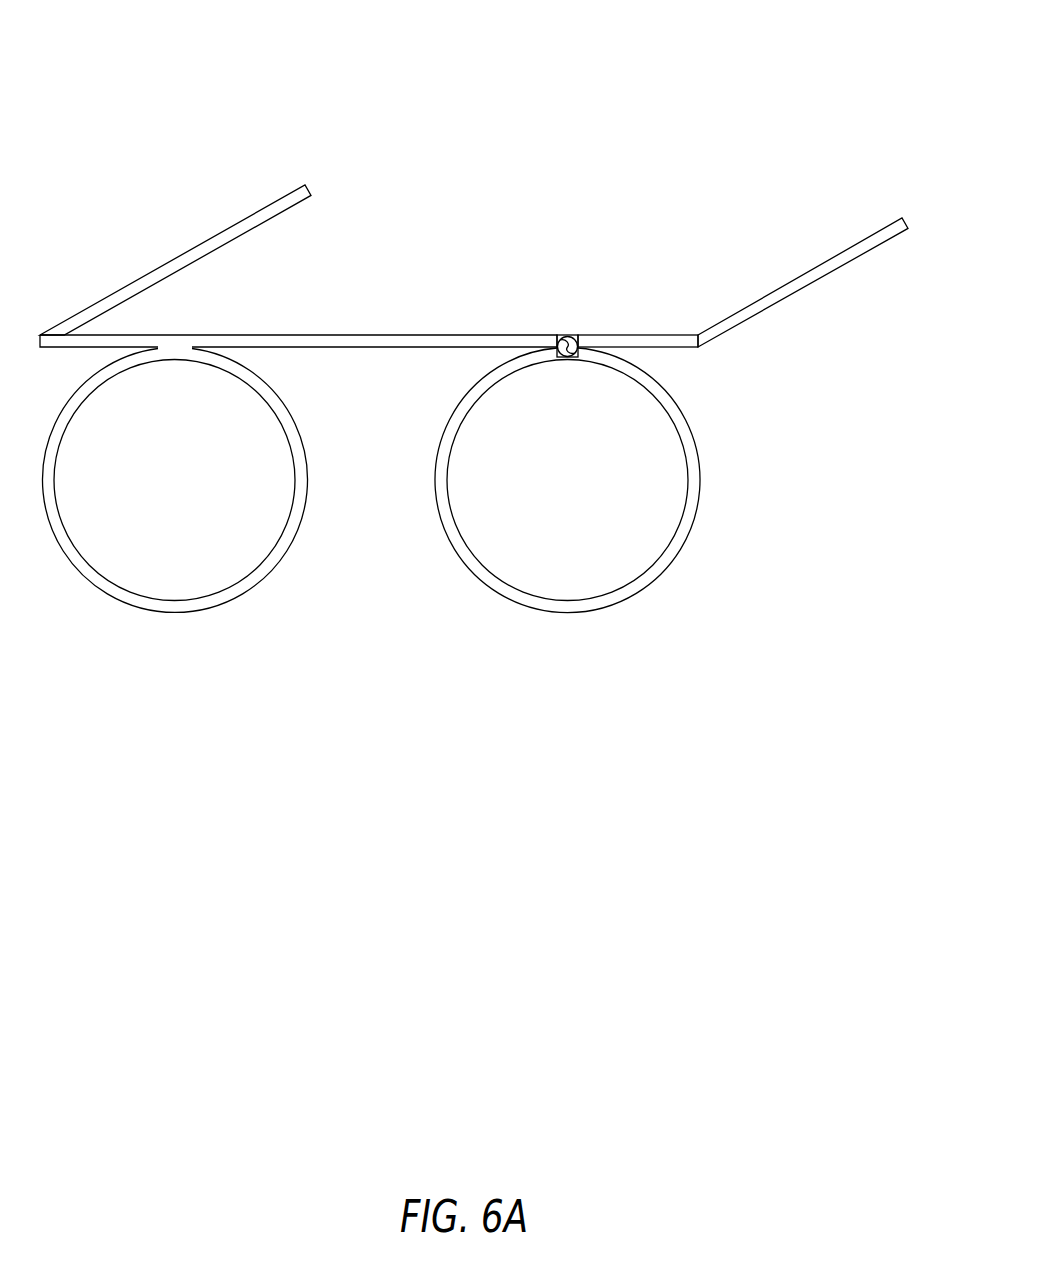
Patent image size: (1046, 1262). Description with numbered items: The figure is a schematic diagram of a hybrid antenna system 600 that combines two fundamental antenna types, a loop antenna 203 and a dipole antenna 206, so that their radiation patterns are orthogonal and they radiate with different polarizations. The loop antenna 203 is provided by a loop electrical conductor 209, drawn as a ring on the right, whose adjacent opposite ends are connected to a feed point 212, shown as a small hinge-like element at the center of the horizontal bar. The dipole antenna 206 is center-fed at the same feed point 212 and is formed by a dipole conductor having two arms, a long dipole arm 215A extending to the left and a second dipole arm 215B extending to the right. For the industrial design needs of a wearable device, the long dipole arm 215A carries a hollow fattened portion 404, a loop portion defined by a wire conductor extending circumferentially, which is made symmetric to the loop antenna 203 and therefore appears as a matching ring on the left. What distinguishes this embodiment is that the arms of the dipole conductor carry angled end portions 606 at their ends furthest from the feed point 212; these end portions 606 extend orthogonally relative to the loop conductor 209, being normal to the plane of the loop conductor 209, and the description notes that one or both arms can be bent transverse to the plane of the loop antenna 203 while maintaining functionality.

The hybrid antenna system 600 is at (250, 80).
The angled end portions 606 is at (240, 226).
The dipole antenna 206 is at (467, 260).
The long dipole arm 215A is at (262, 342).
The dipole arm 215B is at (668, 345).
The feed point 212 is at (568, 338).
The hollow fattened portion 404 is at (108, 583).
The loop electrical conductor 209 is at (486, 578).
The loop antenna 203 is at (664, 625).